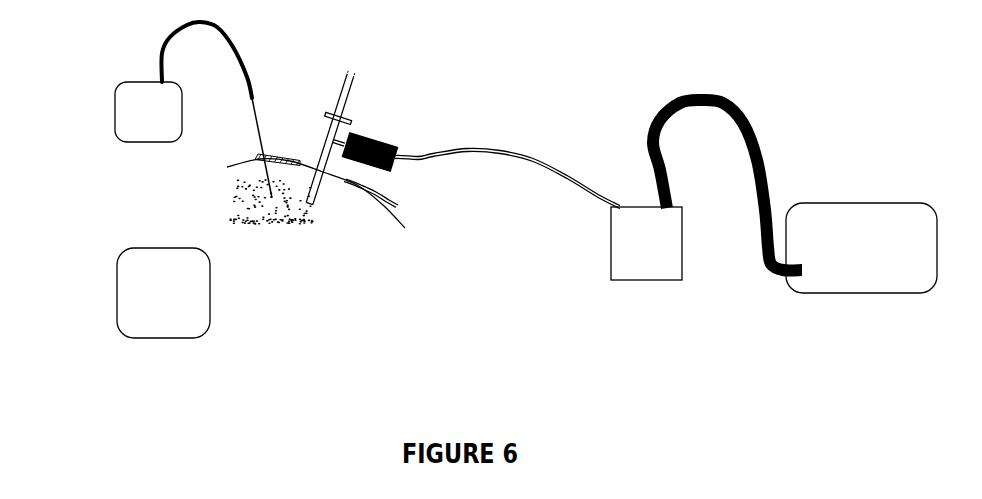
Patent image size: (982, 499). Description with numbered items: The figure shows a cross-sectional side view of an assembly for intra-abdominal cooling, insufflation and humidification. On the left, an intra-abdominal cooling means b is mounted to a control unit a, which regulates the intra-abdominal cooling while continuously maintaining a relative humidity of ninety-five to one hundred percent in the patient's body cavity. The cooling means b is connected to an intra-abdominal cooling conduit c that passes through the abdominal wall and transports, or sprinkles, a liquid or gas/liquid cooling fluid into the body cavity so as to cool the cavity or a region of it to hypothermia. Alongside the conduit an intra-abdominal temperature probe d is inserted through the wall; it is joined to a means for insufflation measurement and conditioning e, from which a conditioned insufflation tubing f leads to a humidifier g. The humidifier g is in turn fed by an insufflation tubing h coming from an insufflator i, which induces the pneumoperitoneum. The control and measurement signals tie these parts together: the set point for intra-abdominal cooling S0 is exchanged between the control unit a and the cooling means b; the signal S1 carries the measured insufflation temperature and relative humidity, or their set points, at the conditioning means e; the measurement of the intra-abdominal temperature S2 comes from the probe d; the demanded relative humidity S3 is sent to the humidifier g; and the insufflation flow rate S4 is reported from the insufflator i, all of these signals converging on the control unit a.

The control unit a is at (163, 293).
The intra-abdominal cooling means b is at (183, 82).
The intra-abdominal cooling conduit c is at (255, 148).
The intra-abdominal temperature probe d is at (363, 177).
The means for insufflation measurement and conditioning e is at (374, 143).
The conditioned insufflation tubing f is at (507, 167).
The humidifier g is at (646, 243).
The insufflation tubing h is at (727, 172).
The insufflator i is at (861, 248).
The set point intra-abdominal cooling S0 is at (124, 125).
The insufflation temperature and relative humidity measurement or set point signal S1 is at (210, 275).
The measurement of the intra-abdominal temperature S2 is at (210, 290).
The demanded relative humidity S3 is at (210, 303).
The insufflation flow rate S4 is at (210, 316).